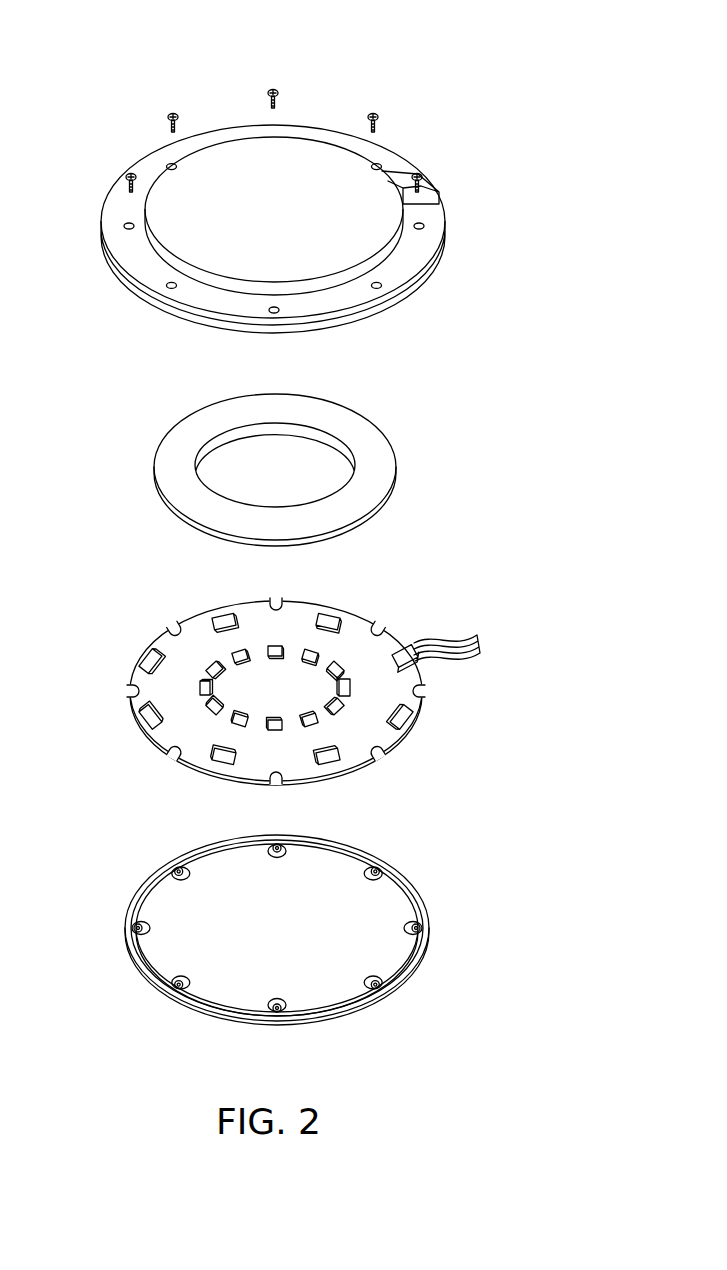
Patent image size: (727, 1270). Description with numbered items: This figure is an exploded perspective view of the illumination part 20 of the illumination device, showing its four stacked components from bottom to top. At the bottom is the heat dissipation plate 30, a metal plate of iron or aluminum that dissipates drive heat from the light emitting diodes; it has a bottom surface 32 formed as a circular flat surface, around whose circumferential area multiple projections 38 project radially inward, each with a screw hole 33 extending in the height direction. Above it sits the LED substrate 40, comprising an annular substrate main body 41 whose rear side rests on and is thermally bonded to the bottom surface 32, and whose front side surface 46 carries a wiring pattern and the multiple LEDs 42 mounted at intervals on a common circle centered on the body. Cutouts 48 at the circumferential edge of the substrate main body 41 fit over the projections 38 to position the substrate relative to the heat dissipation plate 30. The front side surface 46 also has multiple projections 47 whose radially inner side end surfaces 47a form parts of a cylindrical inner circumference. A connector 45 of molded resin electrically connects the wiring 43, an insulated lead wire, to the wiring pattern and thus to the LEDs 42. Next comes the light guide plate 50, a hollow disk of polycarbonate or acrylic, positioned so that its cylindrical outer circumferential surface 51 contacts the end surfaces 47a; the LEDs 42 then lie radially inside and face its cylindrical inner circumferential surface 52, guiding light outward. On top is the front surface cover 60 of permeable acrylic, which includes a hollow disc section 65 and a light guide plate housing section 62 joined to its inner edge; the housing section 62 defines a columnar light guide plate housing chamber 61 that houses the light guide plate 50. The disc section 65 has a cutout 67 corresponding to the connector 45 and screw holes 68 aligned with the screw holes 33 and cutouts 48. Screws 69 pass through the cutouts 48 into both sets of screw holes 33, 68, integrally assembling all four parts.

The illumination part 20 is at (318, 100).
The heat dissipation plate 30 is at (438, 909).
The bottom surface 32 is at (388, 892).
The screw hole 33 is at (430, 945).
The projection 38 is at (176, 878).
The LED substrate 40 is at (423, 729).
The substrate main body 41 is at (343, 732).
The LED 42 is at (352, 685).
The wiring 43 is at (462, 651).
The connector 45 is at (410, 645).
The front side surface 46 is at (180, 680).
The projection 47 is at (340, 607).
The radially inner side end surface 47a is at (220, 632).
The cutout 48 is at (172, 757).
The light guide plate 50 is at (374, 410).
The cylindrical outer circumferential surface 51 is at (235, 537).
The cylindrical inner circumferential surface 52 is at (246, 442).
The front surface cover 60 is at (443, 248).
The light guide plate housing chamber 61 is at (262, 285).
The light guide plate housing section 62 is at (372, 187).
The hollow disc section 65 is at (130, 240).
The cutout 67 is at (432, 194).
The screw hole 68 is at (175, 290).
The screw 69 is at (167, 118).